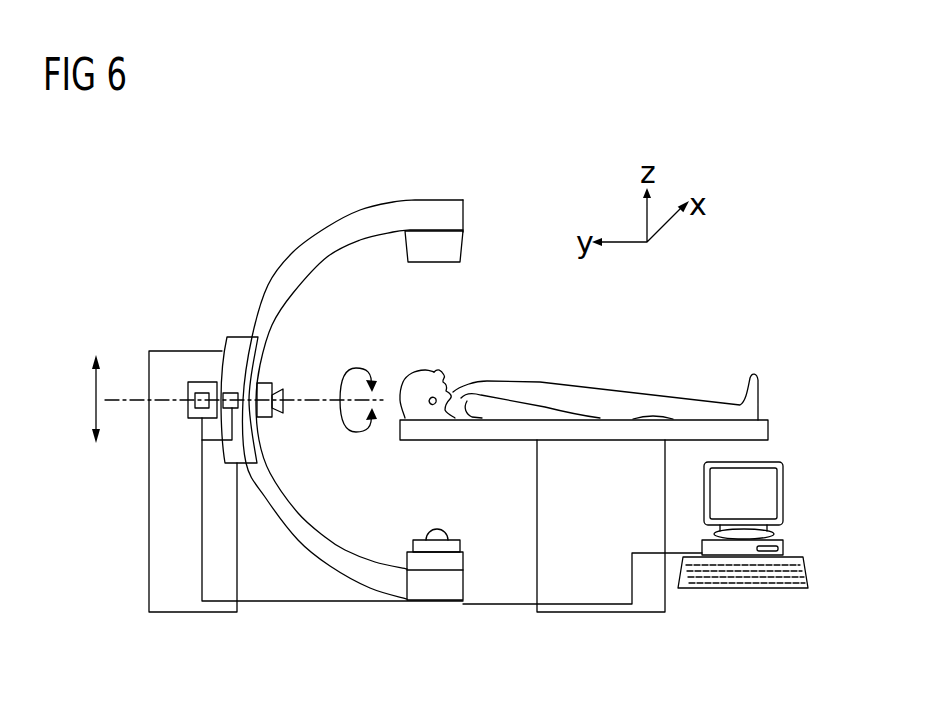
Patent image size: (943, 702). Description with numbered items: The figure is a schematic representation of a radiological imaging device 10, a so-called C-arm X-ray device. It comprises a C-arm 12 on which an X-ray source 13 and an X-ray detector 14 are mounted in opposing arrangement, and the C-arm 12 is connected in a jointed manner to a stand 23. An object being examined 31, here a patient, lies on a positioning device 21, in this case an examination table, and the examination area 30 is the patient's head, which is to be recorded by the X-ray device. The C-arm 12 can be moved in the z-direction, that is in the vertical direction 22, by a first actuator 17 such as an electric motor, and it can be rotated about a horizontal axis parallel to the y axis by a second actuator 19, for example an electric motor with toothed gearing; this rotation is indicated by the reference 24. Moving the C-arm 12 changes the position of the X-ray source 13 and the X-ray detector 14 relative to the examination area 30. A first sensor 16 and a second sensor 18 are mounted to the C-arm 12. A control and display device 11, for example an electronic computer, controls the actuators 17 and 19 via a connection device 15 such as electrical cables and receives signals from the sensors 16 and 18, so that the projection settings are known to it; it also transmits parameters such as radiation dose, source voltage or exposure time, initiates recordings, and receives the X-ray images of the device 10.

The radiological imaging device 10 is at (247, 216).
The control and display device 11 is at (785, 547).
The C-arm 12 is at (346, 217).
The X-ray source 13 is at (462, 545).
The X-ray detector 14 is at (467, 245).
The connection device 15 is at (258, 603).
The first sensor 16 is at (188, 408).
The first actuator 17 is at (198, 382).
The second sensor 18 is at (230, 393).
The second actuator 19 is at (238, 336).
The positioning device 21 is at (488, 433).
The vertical direction 22 is at (95, 382).
The stand 23 is at (148, 578).
The rotation about a horizontal axis 24 is at (362, 431).
The examination area 30 is at (419, 372).
The object being examined 31 is at (685, 402).